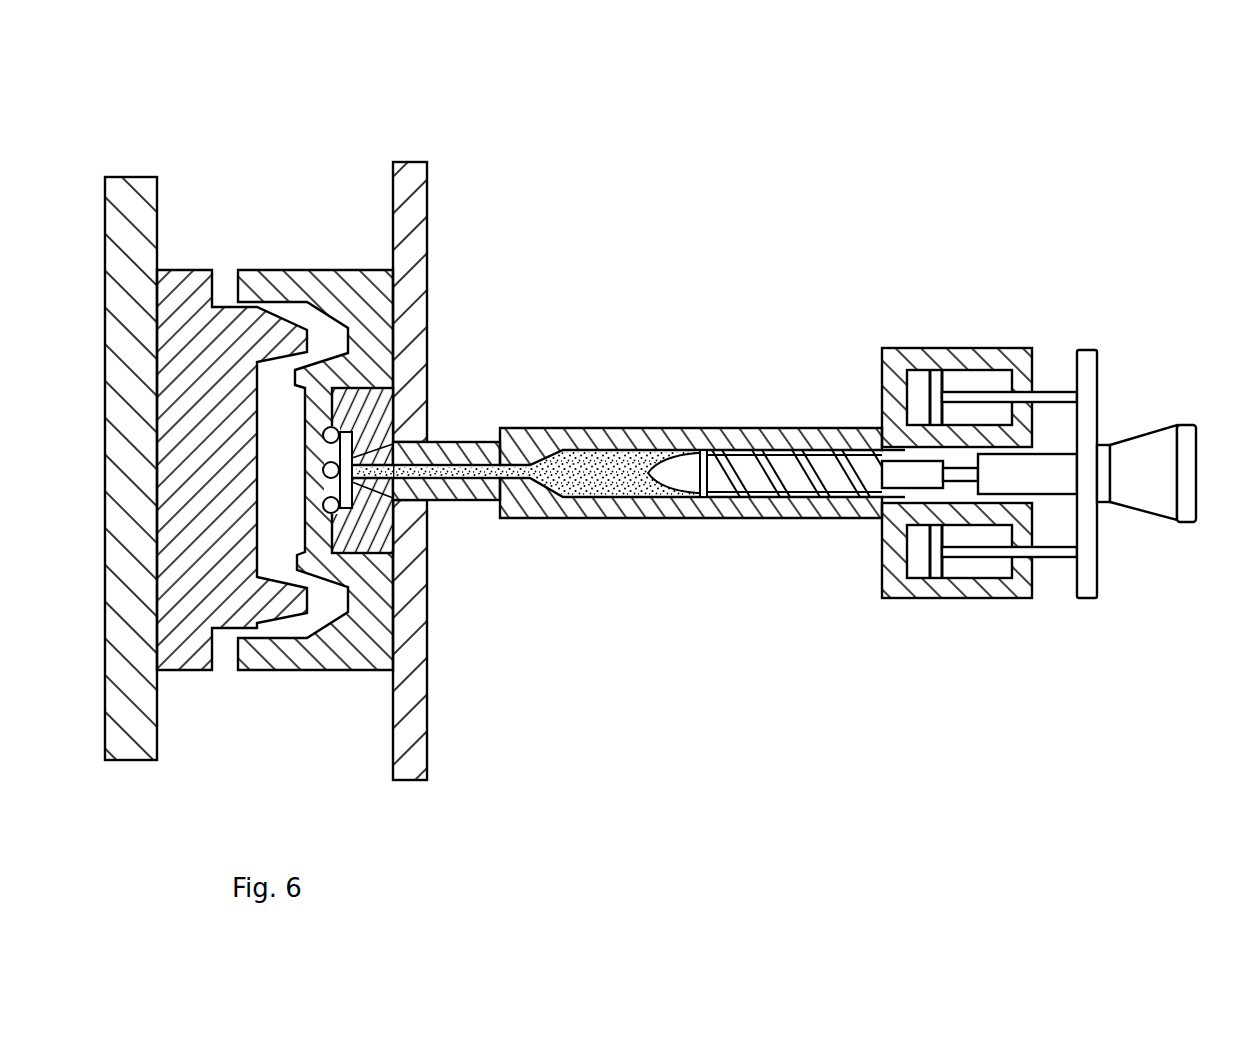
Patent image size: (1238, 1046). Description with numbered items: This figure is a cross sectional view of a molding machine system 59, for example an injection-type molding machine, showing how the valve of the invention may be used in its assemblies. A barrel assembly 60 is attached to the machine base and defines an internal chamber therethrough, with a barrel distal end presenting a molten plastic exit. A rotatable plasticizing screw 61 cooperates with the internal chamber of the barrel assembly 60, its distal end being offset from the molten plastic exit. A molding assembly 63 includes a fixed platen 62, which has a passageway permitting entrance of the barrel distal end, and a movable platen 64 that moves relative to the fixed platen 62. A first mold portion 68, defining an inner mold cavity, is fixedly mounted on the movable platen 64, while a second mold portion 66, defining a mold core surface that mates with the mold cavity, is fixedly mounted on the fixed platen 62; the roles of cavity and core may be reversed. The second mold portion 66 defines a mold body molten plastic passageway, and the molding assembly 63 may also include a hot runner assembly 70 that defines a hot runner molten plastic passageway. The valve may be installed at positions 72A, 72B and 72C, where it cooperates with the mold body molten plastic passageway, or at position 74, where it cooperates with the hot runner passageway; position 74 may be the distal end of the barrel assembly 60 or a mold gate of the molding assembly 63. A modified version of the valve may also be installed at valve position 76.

The molding machine system 59 is at (834, 215).
The barrel assembly 60 is at (683, 427).
The rotatable plasticizing screw 61 is at (905, 474).
The fixed platen 62 is at (412, 207).
The molding assembly 63 is at (304, 129).
The movable platen 64 is at (130, 214).
The second mold portion 66 is at (340, 268).
The first mold portion 68 is at (188, 268).
The hot runner assembly 70 is at (368, 514).
The valve position 72A is at (318, 505).
The valve position 72B is at (318, 470).
The valve position 72C is at (318, 438).
The valve position 74 is at (392, 434).
The valve position 76 is at (660, 472).